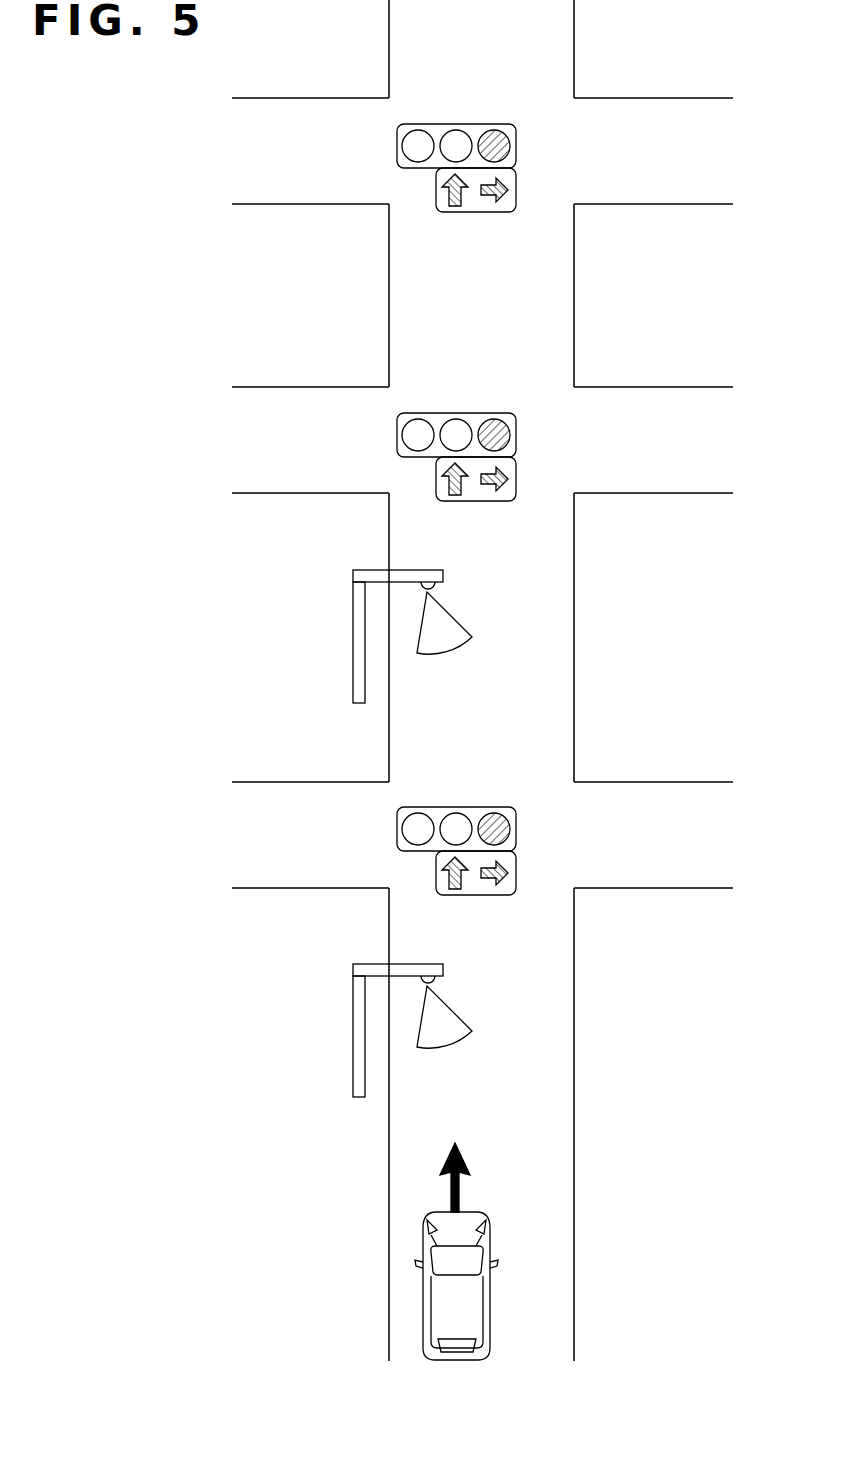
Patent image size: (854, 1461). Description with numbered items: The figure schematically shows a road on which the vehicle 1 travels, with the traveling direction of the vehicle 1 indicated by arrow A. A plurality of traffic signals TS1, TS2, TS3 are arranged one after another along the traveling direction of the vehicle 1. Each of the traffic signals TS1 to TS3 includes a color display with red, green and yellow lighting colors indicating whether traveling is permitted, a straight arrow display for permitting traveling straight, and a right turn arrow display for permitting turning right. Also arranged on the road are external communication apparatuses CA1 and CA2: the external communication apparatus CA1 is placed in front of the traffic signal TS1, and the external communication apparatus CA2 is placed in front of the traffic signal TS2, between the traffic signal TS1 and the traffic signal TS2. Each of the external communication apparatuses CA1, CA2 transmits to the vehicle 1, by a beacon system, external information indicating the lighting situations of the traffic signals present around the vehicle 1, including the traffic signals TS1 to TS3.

The traffic signal TS3 is at (516, 146).
The traffic signal TS2 is at (516, 435).
The traffic signal TS1 is at (516, 829).
The external communication apparatus CA2 is at (443, 572).
The external communication apparatus CA1 is at (443, 966).
The arrow A is at (460, 1190).
The vehicle 1 is at (490, 1297).